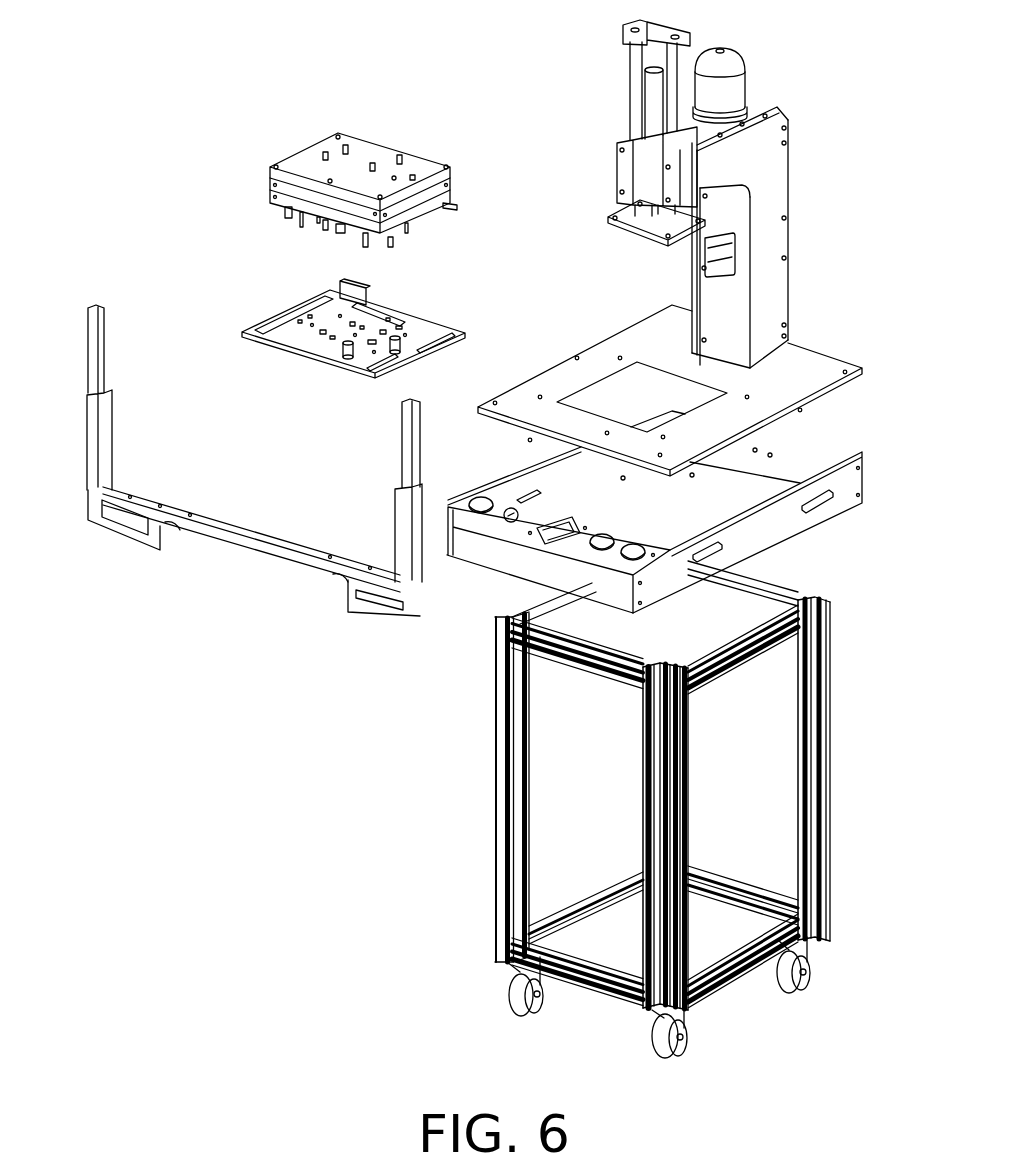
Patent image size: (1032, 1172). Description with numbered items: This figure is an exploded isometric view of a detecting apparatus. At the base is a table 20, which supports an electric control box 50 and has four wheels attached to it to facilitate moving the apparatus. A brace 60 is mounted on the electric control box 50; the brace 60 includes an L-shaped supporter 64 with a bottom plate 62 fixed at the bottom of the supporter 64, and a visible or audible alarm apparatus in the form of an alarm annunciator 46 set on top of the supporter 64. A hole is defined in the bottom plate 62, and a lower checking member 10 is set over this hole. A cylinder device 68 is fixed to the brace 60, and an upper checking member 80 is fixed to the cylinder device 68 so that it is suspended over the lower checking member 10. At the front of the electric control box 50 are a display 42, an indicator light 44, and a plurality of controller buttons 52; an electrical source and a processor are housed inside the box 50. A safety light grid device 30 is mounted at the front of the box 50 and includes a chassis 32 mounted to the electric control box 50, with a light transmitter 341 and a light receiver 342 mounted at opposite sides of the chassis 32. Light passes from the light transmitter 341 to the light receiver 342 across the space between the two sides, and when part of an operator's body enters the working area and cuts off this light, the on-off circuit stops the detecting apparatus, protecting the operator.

The lower checking member 10 is at (271, 319).
The table 20 is at (829, 771).
The safety light grid device 30 is at (227, 460).
The chassis 32 is at (293, 546).
The light transmitter 341 is at (88, 329).
The light receiver 342 is at (402, 423).
The display 42 is at (555, 532).
The indicator light 44 is at (511, 522).
The alarm annunciator 46 is at (727, 50).
The electric control box 50 is at (664, 549).
The controller buttons 52 is at (630, 542).
The brace 60 is at (680, 247).
The bottom plate 62 is at (802, 373).
The L-shaped supporter 64 is at (773, 188).
The cylinder device 68 is at (618, 153).
The upper checking member 80 is at (306, 149).